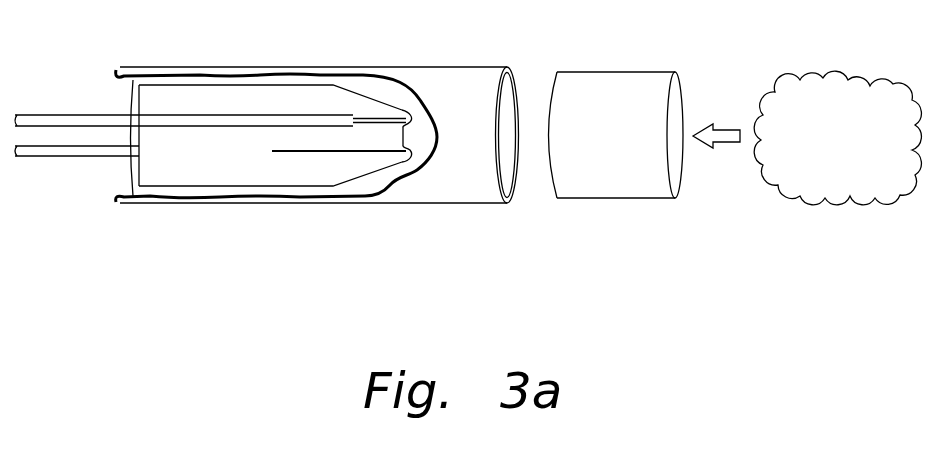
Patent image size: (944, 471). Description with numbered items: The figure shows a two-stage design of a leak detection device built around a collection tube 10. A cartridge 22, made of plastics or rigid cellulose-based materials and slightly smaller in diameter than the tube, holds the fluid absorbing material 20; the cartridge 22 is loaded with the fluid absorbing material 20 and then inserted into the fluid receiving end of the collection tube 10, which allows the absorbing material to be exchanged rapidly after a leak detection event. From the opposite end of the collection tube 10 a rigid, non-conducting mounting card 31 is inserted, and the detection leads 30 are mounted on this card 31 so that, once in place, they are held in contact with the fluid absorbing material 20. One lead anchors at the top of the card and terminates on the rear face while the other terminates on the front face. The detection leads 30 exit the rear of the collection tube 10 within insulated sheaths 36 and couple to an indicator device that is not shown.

The collection tube 10 is at (484, 110).
The fluid absorbing material 20 is at (860, 155).
The cartridge 22 is at (633, 150).
The detection leads 30 is at (345, 139).
The mounting card 31 is at (210, 175).
The insulated sheaths 36 is at (55, 121).